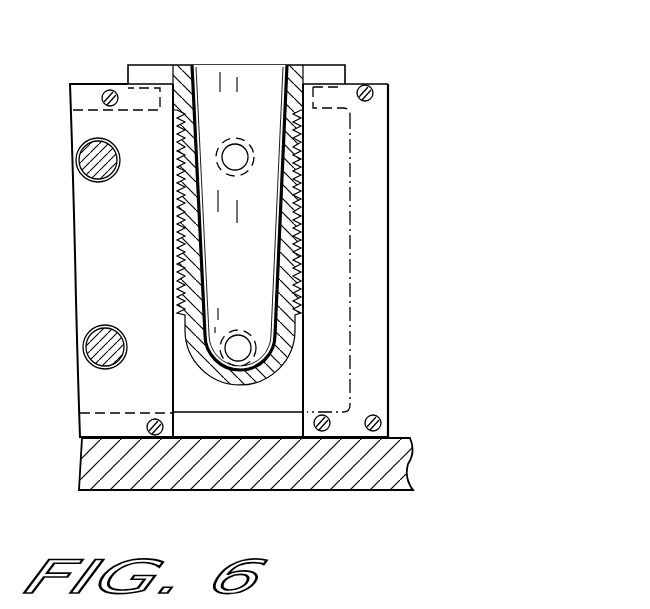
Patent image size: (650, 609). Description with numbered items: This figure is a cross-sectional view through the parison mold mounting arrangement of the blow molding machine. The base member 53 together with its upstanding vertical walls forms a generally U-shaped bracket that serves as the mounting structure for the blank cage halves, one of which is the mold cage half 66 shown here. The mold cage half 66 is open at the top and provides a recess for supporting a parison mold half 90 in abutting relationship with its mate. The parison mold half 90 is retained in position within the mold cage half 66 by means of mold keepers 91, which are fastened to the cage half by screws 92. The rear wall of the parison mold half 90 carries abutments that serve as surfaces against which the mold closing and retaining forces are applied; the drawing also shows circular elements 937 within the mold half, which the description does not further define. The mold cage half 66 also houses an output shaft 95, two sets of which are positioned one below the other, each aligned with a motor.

The base member 53 is at (403, 457).
The mold cage half 66 is at (388, 273).
The parison mold half 90 is at (272, 65).
The mold keeper 91 is at (100, 258).
The screws 92 is at (110, 90).
The output shaft 95 is at (92, 156).
The pins 937 is at (256, 127).